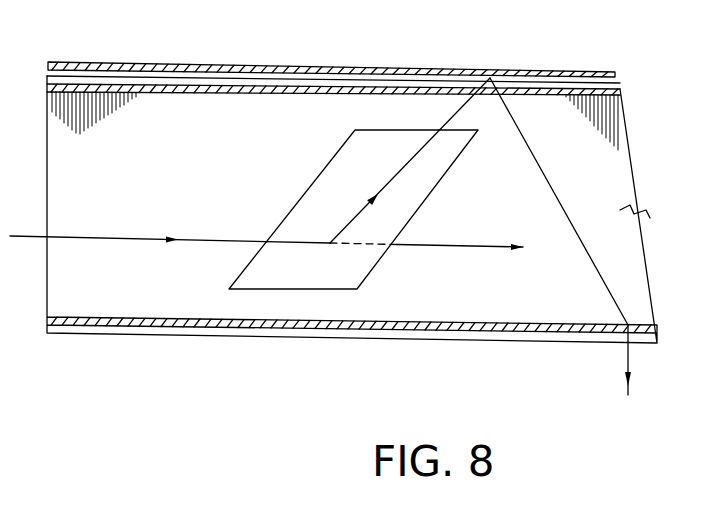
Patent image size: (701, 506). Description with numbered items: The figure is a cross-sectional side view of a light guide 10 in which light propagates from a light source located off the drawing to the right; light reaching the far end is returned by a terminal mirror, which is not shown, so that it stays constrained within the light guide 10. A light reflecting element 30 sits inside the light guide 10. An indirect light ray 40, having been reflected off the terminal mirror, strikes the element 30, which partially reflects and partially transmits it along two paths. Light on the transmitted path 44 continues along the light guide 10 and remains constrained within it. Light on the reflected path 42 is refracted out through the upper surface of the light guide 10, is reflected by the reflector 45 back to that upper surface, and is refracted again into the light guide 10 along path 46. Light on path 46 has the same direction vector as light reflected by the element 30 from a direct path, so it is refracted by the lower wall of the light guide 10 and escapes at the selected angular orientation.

The light guide 10 is at (133, 333).
The light reflecting element 30 is at (355, 262).
The indirect light ray 40 is at (115, 240).
The reflected light path 42 is at (458, 112).
The transmitted light path 44 is at (450, 248).
The reflector 45 is at (133, 62).
The return light path 46 is at (548, 177).